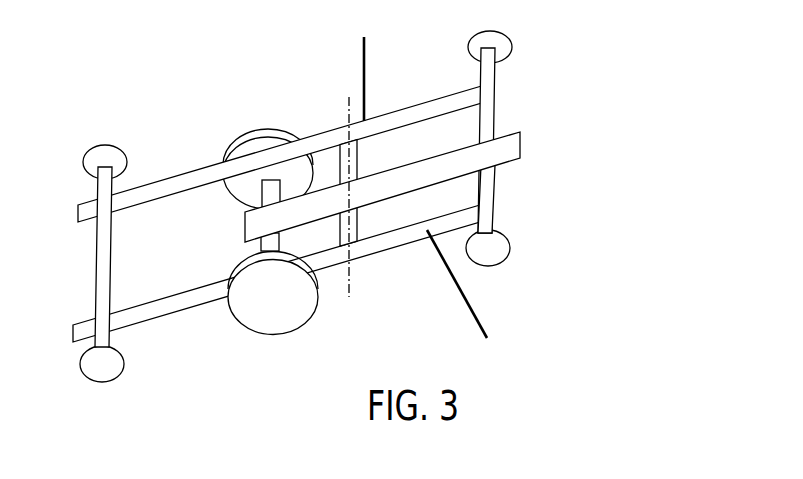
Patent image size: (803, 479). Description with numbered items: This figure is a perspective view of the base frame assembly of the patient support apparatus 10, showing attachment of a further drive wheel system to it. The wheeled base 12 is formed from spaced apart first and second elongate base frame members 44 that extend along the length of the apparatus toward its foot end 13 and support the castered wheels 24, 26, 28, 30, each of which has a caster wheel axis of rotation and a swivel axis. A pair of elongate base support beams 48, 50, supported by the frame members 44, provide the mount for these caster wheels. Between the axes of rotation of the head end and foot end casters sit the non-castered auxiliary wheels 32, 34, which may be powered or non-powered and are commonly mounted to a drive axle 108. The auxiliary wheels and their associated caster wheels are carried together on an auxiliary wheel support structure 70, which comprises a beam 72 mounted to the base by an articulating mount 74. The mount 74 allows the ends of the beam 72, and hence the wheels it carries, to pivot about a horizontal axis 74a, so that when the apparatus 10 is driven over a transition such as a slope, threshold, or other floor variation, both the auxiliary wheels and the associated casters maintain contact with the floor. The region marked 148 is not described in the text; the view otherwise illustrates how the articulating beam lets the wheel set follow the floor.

The patient support apparatus 10 is at (328, 205).
The wheeled base 12 is at (177, 307).
The foot end 13 is at (487, 103).
The castered wheel 24 is at (97, 152).
The castered wheel 26 is at (88, 368).
The castered wheel 28 is at (502, 43).
The castered wheel 30 is at (502, 255).
The auxiliary wheel 32 is at (300, 322).
The auxiliary wheel 34 is at (262, 132).
The elongate base frame member 44 is at (434, 183).
The elongate base support beam 48 is at (98, 277).
The elongate base support beam 50 is at (493, 200).
The auxiliary wheel support structure 70 is at (391, 154).
The beam 72 is at (482, 157).
The articulating mount 74 is at (343, 150).
The horizontal axis 74a is at (350, 95).
The drive axle 108 is at (226, 164).
The lower gap 148 is at (389, 207).